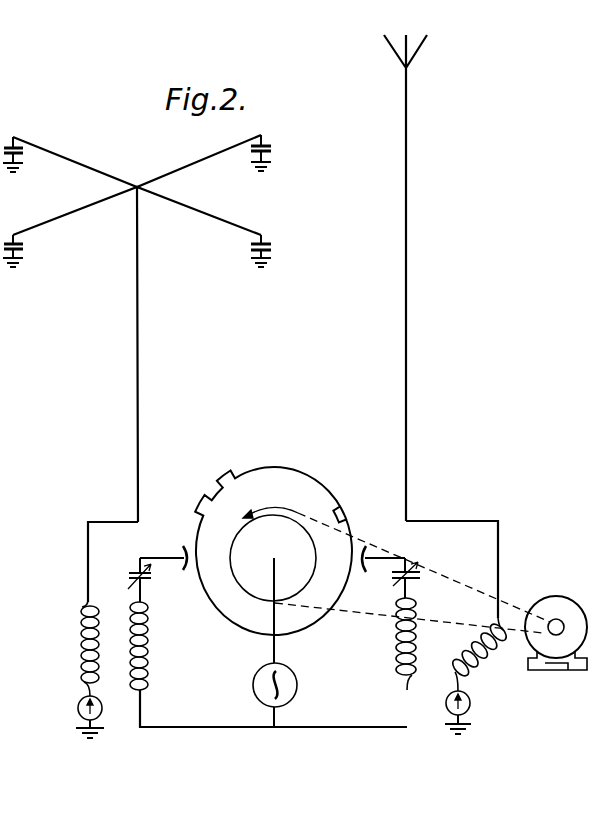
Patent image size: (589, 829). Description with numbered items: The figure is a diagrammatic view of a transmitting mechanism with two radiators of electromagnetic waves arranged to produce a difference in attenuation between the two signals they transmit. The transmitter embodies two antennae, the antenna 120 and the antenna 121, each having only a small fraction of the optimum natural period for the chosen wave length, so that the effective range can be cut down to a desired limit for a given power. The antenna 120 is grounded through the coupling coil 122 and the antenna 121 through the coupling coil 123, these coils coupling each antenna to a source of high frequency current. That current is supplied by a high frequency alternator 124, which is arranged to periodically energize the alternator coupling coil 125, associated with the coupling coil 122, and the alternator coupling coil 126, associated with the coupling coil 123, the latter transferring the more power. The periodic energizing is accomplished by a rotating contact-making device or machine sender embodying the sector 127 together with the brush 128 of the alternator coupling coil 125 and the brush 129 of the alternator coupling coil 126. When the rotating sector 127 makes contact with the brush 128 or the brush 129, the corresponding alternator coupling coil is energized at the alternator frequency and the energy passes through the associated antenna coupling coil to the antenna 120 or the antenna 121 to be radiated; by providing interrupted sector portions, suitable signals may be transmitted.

The antenna 120 is at (406, 227).
The antenna 121 is at (139, 190).
The coupling coil 122 is at (483, 656).
The coupling coil 123 is at (80, 644).
The high frequency alternator 124 is at (297, 683).
The alternator coupling coil 125 is at (396, 640).
The alternator coupling coil 126 is at (149, 652).
The sector 127 is at (318, 483).
The brush 128 is at (367, 554).
The brush 129 is at (181, 555).